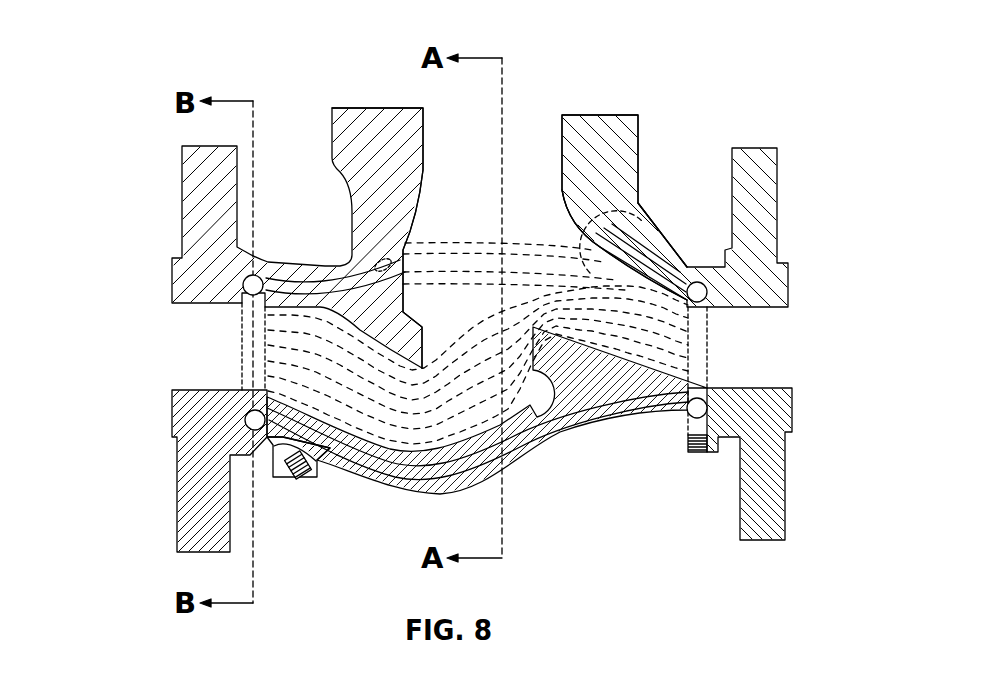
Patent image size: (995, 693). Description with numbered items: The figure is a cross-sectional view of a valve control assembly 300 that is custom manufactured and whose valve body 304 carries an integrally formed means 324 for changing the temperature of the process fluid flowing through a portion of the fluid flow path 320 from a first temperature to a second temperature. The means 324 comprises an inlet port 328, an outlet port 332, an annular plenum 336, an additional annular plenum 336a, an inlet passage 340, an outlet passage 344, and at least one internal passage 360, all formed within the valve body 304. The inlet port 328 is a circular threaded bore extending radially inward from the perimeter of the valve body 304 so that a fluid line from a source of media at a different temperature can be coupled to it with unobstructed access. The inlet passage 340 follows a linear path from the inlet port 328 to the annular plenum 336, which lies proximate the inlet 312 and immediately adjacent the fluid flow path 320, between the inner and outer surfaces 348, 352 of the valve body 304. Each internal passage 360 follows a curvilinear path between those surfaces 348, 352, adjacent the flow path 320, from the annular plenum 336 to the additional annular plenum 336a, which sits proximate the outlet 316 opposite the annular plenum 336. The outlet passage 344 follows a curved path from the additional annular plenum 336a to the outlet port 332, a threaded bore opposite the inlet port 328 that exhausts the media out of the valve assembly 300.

The valve control assembly 300 is at (134, 72).
The valve body 304 is at (600, 117).
The inlet 312 is at (829, 351).
The outlet 316 is at (97, 350).
The fluid flow path 320 is at (466, 420).
The means for changing the temperature of the process fluid 324 is at (447, 160).
The inlet port 328 is at (700, 453).
The outlet port 332 is at (298, 478).
The annular plenum 336 is at (710, 322).
The additional annular plenum 336a is at (242, 315).
The inlet passage 340 is at (660, 430).
The outlet passage 344 is at (283, 437).
The inner surface 348 is at (563, 200).
The outer surface 352 is at (633, 200).
The internal passage 360 is at (497, 240).